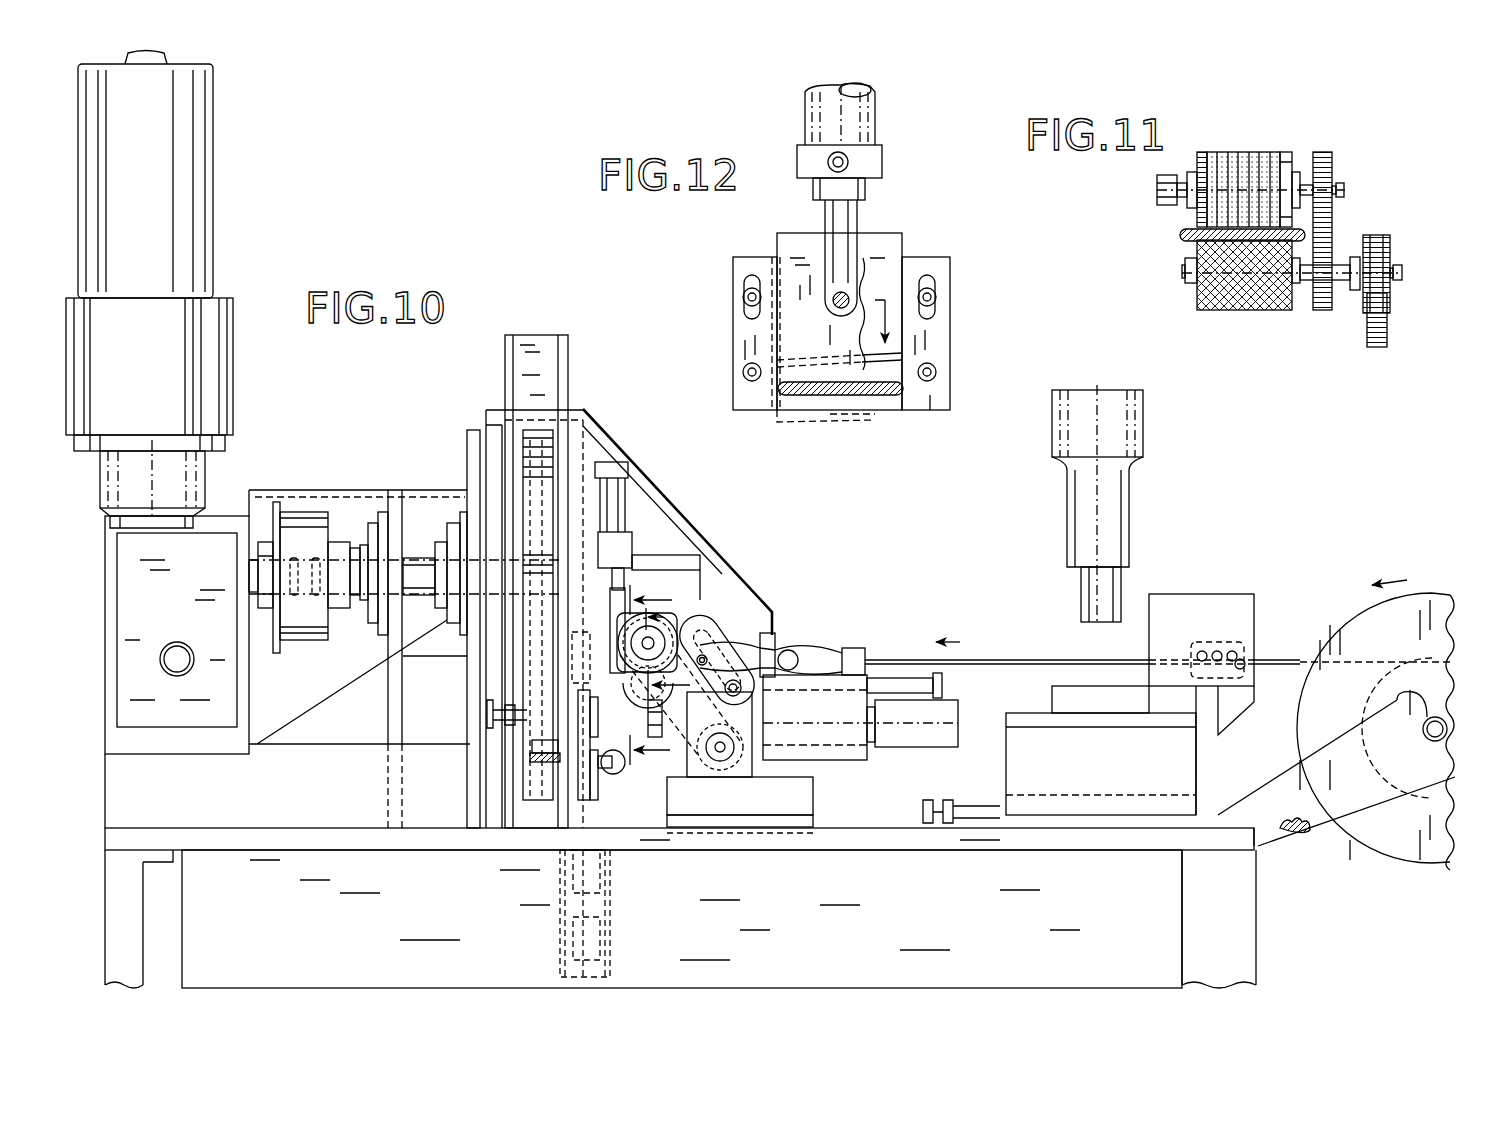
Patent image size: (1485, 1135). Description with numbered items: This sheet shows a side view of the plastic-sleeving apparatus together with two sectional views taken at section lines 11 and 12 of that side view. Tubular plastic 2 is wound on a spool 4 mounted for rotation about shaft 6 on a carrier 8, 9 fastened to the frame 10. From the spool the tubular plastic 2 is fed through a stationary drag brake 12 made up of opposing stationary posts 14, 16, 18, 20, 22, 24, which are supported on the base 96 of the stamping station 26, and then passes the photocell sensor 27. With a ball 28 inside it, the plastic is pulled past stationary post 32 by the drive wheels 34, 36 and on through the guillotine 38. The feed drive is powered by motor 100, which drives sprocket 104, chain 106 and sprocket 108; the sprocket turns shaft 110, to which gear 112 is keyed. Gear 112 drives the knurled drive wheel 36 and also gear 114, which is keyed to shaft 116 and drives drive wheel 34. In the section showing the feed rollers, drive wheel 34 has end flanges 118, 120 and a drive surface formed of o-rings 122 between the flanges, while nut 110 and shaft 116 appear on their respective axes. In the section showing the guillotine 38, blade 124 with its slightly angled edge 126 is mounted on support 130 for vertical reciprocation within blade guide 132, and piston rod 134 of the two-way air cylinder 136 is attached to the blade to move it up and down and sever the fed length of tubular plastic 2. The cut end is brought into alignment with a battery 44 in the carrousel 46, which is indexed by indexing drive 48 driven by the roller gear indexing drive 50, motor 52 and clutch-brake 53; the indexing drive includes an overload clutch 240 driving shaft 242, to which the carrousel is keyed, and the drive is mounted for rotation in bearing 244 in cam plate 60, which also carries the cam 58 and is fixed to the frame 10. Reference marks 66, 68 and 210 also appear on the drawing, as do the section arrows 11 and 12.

In FIG. 10, the tubular plastic 2 is at (1292, 659).
In FIG. 12, the tubular plastic 2 is at (883, 395).
In FIG. 11, the tubular plastic 2 is at (1182, 238).
In FIG. 10, the spool 4 is at (1420, 600).
In FIG. 10, the shaft 6 is at (1424, 733).
In FIG. 10, the carrier 8 is at (1292, 832).
In FIG. 10, the carrier 9 is at (1365, 790).
In FIG. 10, the frame 10 is at (873, 837).
In FIG. 10, the section line 11— 11 is at (668, 651).
In FIG. 10, the stationary drag brake 12 is at (650, 676).
In FIG. 10, the stationary post 14 is at (1202, 650).
In FIG. 10, the stationary post 16 is at (1217, 650).
In FIG. 10, the stationary post 18 is at (1232, 650).
In FIG. 10, the stationary post 20 is at (1206, 686).
In FIG. 10, the stationary post 22 is at (1200, 662).
In FIG. 10, the stationary post 24 is at (1243, 673).
In FIG. 10, the stamping station 26 is at (1136, 500).
In FIG. 10, the photocell sensor 27 is at (857, 649).
In FIG. 10, the ball 28 is at (796, 652).
In FIG. 10, the stationary post 32 is at (770, 635).
In FIG. 11, the drive wheel 34 is at (1202, 150).
In FIG. 11, the knurled drive wheel 36 is at (1237, 300).
In FIG. 10, the guillotine 38 is at (632, 501).
In FIG. 12, the guillotine 38 is at (872, 220).
In FIG. 10, the battery 44 is at (532, 743).
In FIG. 10, the carrousel 46 is at (536, 435).
In FIG. 10, the indexing drive 48 is at (342, 513).
In FIG. 10, the roller gear indexing drive 50 is at (162, 617).
In FIG. 10, the motor 52 is at (128, 178).
In FIG. 10, the clutch-brake 53 is at (133, 374).
In FIG. 10, the cam 58 is at (488, 714).
In FIG. 10, the cam plate 60 is at (478, 818).
In FIG. 10, the column 66 is at (536, 343).
In FIG. 10, the block 68 is at (532, 757).
In FIG. 10, the base 96 is at (1088, 781).
In FIG. 10, the motor 100 is at (843, 748).
In FIG. 10, the sprocket 104 is at (728, 752).
In FIG. 10, the chain 106 is at (712, 745).
In FIG. 11, the chain 106 is at (1388, 336).
In FIG. 10, the sprocket 108 is at (652, 640).
In FIG. 11, the sprocket 108 is at (1388, 250).
In FIG. 10, the shaft 110 is at (712, 652).
In FIG. 11, the shaft 110 is at (1402, 273).
In FIG. 11, the gear 112 is at (1325, 300).
In FIG. 11, the gear 114 is at (1332, 158).
In FIG. 11, the shaft 116 is at (1344, 190).
In FIG. 11, the end flange 118 is at (1200, 216).
In FIG. 11, the end flange 120 is at (1286, 150).
In FIG. 11, the o-rings 122 is at (1256, 150).
In FIG. 12, the blade 124 is at (890, 250).
In FIG. 12, the angled edge 126 is at (905, 357).
In FIG. 10, the support 130 is at (697, 587).
In FIG. 10, the blade guide 132 is at (618, 597).
In FIG. 12, the blade guide 132 is at (940, 327).
In FIG. 10, the piston rod 134 is at (615, 590).
In FIG. 12, the piston rod 134 is at (828, 220).
In FIG. 10, the two-way air cylinder 136 is at (612, 483).
In FIG. 12, the two-way air cylinder 136 is at (818, 110).
In FIG. 10, the direction of motion 210 is at (640, 723).
In FIG. 10, the overload clutch 240 is at (302, 522).
In FIG. 10, the shaft 242 is at (416, 568).
In FIG. 10, the bearing 244 is at (447, 620).